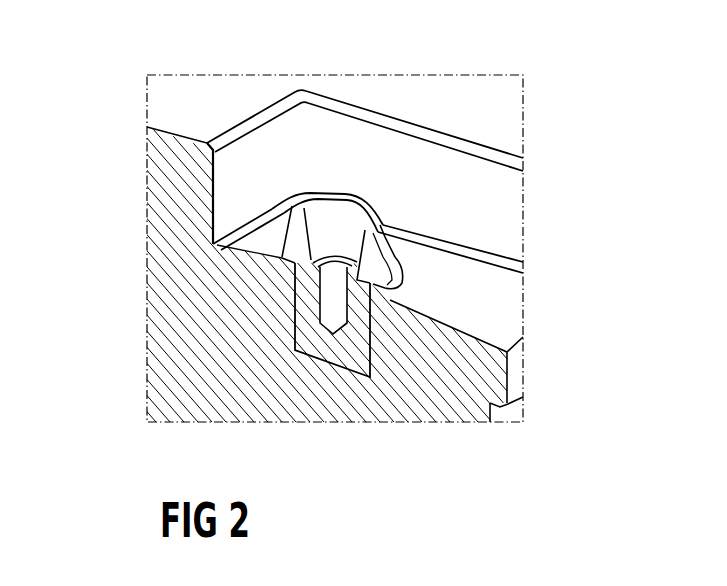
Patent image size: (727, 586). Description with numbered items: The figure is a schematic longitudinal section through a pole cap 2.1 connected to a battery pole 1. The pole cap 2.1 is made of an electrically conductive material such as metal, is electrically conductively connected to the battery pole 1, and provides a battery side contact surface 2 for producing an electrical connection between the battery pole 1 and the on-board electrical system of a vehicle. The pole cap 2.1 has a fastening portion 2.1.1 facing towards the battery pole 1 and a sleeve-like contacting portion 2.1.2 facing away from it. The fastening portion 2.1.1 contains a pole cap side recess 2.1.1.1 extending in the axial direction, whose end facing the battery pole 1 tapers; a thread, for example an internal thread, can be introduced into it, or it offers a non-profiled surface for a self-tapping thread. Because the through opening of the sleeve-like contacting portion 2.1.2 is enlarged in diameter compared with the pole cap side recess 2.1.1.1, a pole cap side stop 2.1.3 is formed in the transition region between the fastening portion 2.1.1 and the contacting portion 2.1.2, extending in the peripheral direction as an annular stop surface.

The battery pole 1 is at (173, 390).
The battery side contact surface 2 is at (327, 170).
The pole cap 2.1 is at (333, 214).
The fastening portion 2.1.1 is at (378, 345).
The pole cap side recess 2.1.1.1 is at (330, 302).
The contacting portion 2.1.2 is at (388, 257).
The pole cap side stop 2.1.3 is at (398, 284).